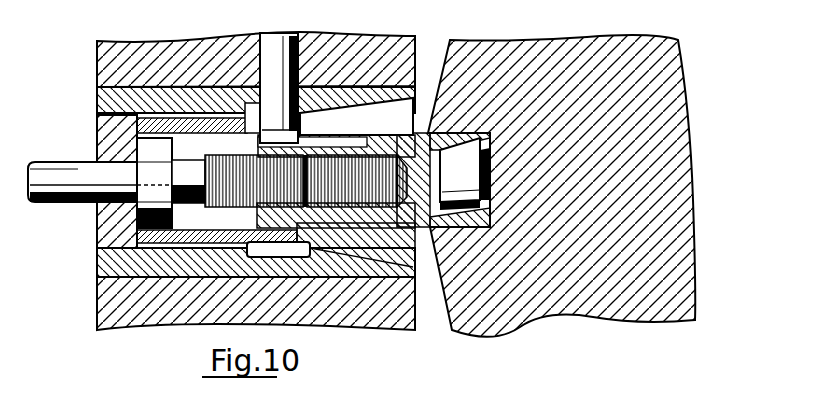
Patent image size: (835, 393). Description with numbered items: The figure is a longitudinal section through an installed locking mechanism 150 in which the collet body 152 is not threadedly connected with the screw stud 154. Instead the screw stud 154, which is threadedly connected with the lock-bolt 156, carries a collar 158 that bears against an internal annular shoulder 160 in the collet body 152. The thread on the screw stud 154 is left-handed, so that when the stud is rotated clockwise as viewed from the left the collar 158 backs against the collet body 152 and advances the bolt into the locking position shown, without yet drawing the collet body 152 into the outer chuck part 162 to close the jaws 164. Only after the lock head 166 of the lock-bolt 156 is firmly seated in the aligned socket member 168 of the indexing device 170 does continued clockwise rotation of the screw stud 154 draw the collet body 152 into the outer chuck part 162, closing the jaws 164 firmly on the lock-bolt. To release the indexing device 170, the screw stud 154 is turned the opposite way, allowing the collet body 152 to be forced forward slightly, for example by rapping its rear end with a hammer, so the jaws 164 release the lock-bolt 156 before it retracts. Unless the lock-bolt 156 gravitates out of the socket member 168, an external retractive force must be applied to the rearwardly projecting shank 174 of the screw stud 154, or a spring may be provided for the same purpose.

The locking mechanism 150 is at (259, 195).
The collet body 152 is at (117, 132).
The screw stud 154 is at (185, 168).
The lock-bolt 156 is at (283, 208).
The collar 158 is at (160, 203).
The internal annular shoulder 160 is at (137, 210).
The outer chuck part 162 is at (132, 102).
The jaws 164 is at (360, 126).
The lock head 166 is at (475, 178).
The socket member 168 is at (463, 222).
The indexing device 170 is at (533, 38).
The rearwardly projecting shank 174 is at (117, 186).